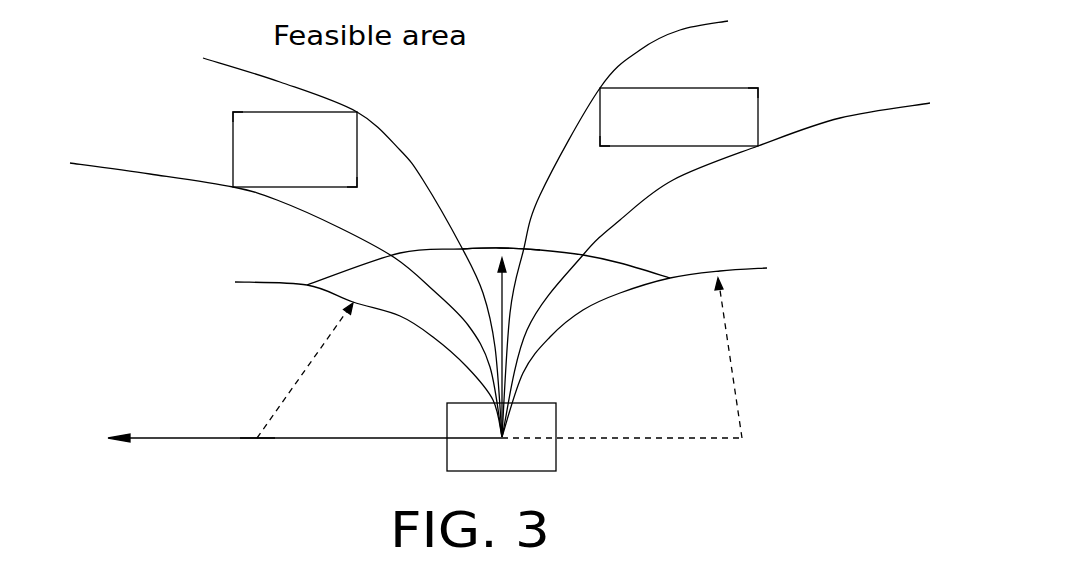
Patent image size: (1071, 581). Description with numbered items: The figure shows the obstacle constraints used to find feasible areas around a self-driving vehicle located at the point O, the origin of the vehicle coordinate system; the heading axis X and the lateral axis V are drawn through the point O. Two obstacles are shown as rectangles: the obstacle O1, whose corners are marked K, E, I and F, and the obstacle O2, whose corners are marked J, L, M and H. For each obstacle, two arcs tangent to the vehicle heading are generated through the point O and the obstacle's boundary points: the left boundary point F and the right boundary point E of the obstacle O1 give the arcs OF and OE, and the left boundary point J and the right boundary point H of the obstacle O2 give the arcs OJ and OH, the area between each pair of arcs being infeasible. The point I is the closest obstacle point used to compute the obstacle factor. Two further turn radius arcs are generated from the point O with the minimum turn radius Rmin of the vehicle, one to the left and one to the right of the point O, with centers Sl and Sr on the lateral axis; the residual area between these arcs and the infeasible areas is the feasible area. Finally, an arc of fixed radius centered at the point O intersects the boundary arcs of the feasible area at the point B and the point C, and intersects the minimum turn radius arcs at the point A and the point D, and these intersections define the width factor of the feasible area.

The obstacle O1 is at (295, 149).
The obstacle O2 is at (679, 118).
The obstacle O1 corner K is at (225, 106).
The right boundary point of the obstacle O1 E is at (352, 247).
The left boundary point of the obstacle O1 F is at (286, 300).
The closest obstacle point I is at (357, 193).
The left boundary point of the obstacle O2 J is at (615, 229).
The obstacle O2 corner L is at (764, 88).
The obstacle O2 corner M is at (593, 156).
The right boundary point of the obstacle O2 H is at (716, 270).
The intersection point with minimum turn radius arc A is at (368, 348).
The intersection point with boundary arc of feasible area B is at (488, 255).
The intersection point with boundary arc of feasible area C is at (501, 238).
The intersection point with minimum turn radius arc D is at (634, 347).
The X axis (vehicle heading) X is at (495, 347).
The point O is at (501, 437).
The lateral V axis V is at (296, 451).
The left turning center Sl is at (257, 453).
The right turning center Sr is at (635, 453).
The minimum turn radius Rmin is at (524, 358).